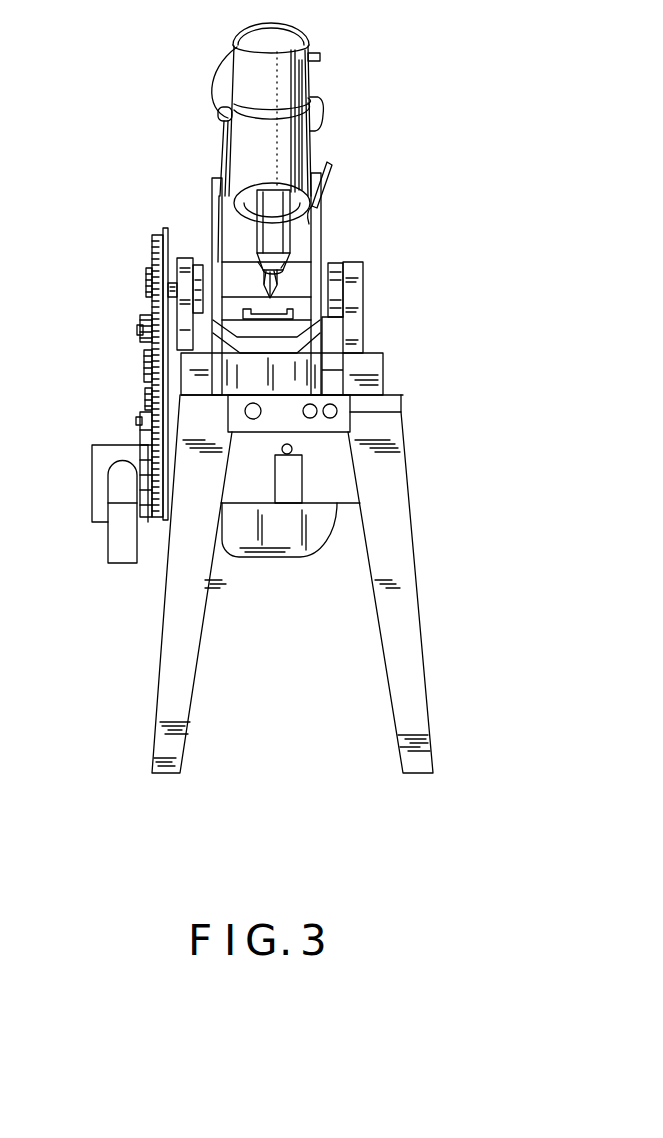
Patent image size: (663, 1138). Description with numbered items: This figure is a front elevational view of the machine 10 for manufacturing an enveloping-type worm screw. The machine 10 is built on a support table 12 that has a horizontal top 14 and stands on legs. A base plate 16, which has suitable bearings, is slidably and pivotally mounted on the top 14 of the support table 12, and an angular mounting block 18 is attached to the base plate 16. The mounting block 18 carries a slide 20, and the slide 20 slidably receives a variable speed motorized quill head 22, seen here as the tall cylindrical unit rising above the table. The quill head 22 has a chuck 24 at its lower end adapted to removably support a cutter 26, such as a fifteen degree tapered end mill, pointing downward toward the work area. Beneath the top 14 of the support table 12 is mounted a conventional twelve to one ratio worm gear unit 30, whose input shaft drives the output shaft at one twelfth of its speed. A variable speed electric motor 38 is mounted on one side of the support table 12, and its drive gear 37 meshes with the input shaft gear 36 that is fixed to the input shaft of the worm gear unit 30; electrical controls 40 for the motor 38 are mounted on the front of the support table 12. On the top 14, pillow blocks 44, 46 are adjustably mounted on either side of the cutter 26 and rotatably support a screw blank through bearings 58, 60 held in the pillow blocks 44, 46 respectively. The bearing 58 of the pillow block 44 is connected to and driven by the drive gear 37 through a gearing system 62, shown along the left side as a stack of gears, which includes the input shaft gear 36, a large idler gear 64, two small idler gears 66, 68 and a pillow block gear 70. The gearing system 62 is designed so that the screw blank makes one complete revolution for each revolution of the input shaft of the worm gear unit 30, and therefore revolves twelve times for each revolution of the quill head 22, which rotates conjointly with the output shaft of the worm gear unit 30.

The machine 10 is at (320, 37).
The support table 12 is at (410, 460).
The horizontal top 14 is at (401, 400).
The base plate 16 is at (343, 372).
The angular mounting block 18 is at (321, 216).
The slide 20 is at (290, 316).
The variable speed motorized quill head 22 is at (216, 258).
The chuck 24 is at (283, 280).
The cutter 26 is at (283, 290).
The worm gear unit 30 is at (250, 557).
The input shaft gear 36 is at (152, 450).
The drive gear 37 is at (145, 470).
The variable speed electric motor 38 is at (113, 550).
The electrical controls 40 is at (282, 474).
The pillow block 44 is at (187, 258).
The pillow block 46 is at (364, 262).
The bearing 58 is at (198, 262).
The bearing 60 is at (335, 262).
The gearing system 62 is at (134, 268).
The large idler gear 64 is at (152, 357).
The small idler gear 66 is at (150, 410).
The small idler gear 68 is at (146, 316).
The pillow block gear 70 is at (153, 242).